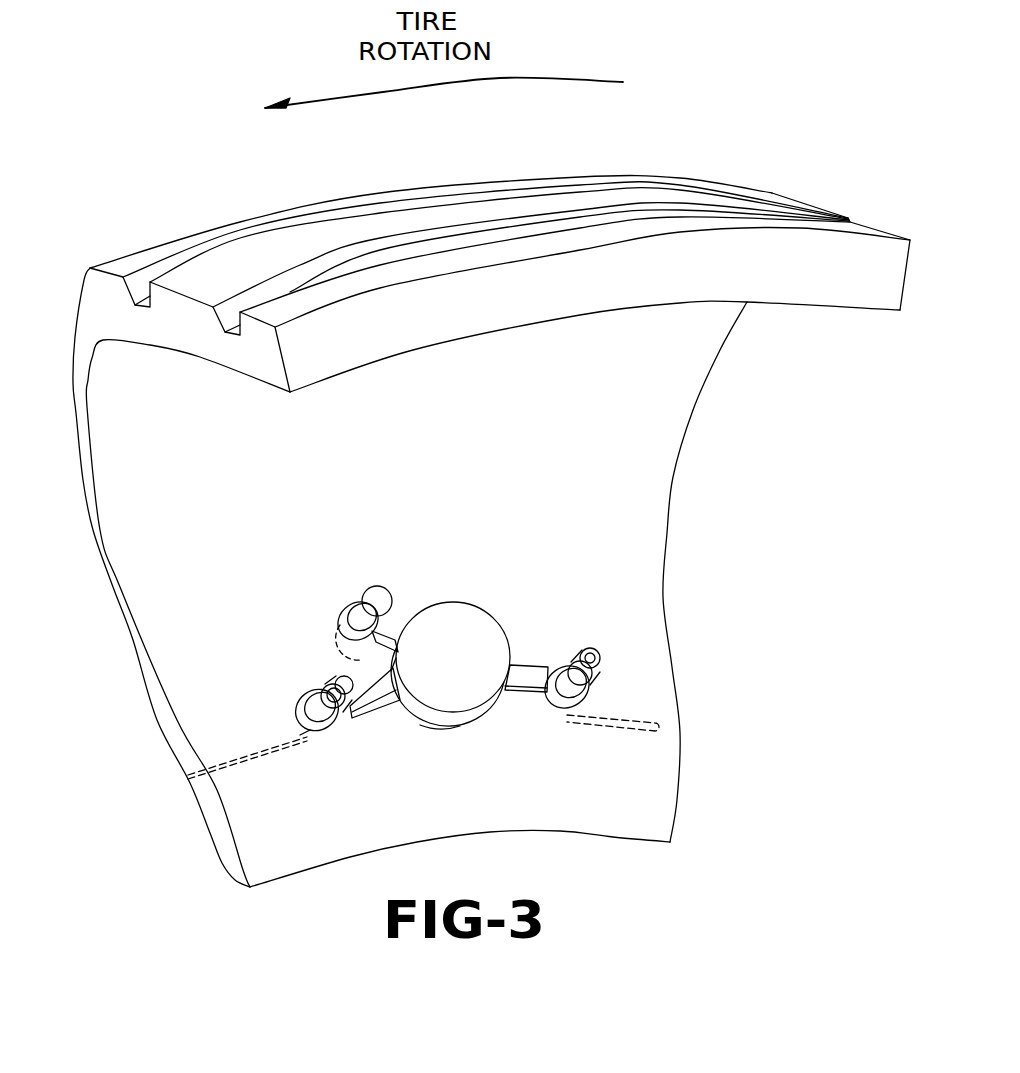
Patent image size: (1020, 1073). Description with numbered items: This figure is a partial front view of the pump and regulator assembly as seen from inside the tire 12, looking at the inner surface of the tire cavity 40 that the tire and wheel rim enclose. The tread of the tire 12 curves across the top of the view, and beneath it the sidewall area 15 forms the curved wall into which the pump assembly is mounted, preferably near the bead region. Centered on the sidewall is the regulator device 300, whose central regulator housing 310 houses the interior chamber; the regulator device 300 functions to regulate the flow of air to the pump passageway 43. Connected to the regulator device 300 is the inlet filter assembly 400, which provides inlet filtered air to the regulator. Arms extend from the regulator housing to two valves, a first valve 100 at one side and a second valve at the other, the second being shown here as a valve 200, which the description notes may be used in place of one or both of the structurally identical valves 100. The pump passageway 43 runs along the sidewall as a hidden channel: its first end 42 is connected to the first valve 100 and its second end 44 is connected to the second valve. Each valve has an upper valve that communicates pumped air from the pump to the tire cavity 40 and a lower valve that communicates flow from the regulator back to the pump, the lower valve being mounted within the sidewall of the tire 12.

The tire 12 is at (774, 192).
The sidewall area 15 is at (78, 407).
The tire cavity 40 is at (187, 485).
The first end 42 is at (310, 733).
The pump passageway 43 is at (250, 753).
The second end 44 is at (560, 717).
The valve 100 is at (302, 673).
The valve 200 is at (595, 637).
The regulator device 300 is at (462, 598).
The central regulator housing 310 is at (433, 727).
The inlet filter assembly 400 is at (360, 580).